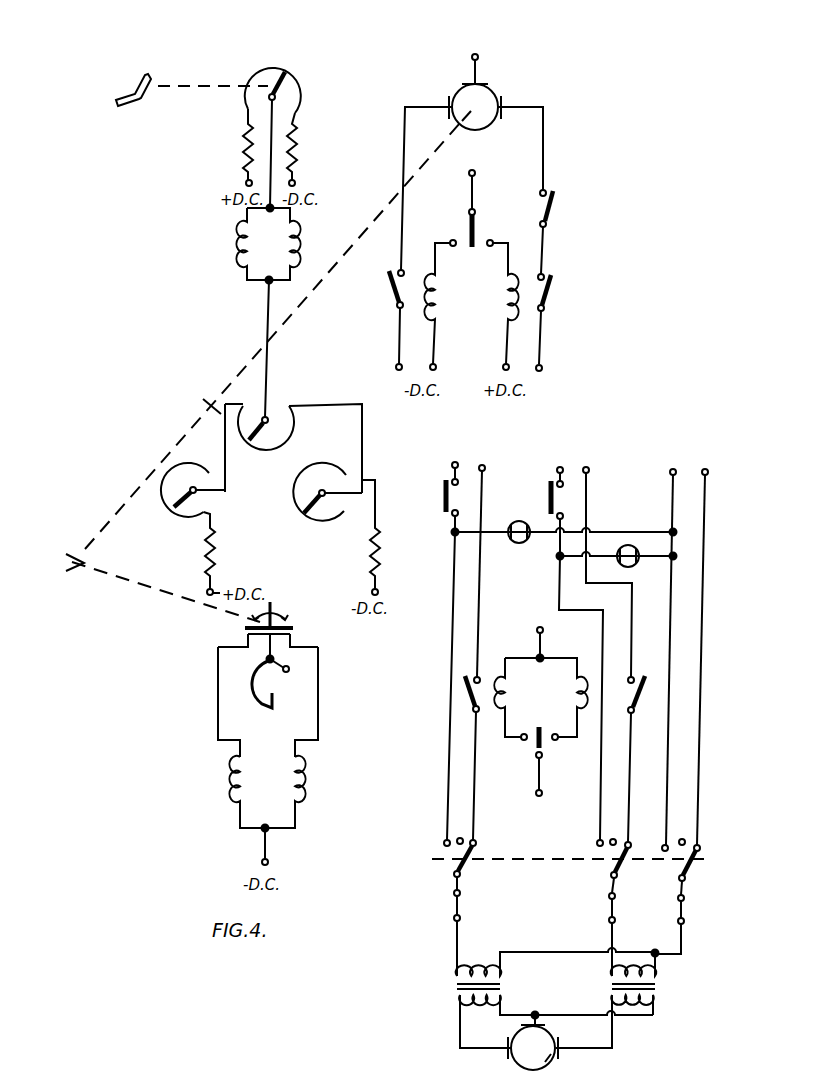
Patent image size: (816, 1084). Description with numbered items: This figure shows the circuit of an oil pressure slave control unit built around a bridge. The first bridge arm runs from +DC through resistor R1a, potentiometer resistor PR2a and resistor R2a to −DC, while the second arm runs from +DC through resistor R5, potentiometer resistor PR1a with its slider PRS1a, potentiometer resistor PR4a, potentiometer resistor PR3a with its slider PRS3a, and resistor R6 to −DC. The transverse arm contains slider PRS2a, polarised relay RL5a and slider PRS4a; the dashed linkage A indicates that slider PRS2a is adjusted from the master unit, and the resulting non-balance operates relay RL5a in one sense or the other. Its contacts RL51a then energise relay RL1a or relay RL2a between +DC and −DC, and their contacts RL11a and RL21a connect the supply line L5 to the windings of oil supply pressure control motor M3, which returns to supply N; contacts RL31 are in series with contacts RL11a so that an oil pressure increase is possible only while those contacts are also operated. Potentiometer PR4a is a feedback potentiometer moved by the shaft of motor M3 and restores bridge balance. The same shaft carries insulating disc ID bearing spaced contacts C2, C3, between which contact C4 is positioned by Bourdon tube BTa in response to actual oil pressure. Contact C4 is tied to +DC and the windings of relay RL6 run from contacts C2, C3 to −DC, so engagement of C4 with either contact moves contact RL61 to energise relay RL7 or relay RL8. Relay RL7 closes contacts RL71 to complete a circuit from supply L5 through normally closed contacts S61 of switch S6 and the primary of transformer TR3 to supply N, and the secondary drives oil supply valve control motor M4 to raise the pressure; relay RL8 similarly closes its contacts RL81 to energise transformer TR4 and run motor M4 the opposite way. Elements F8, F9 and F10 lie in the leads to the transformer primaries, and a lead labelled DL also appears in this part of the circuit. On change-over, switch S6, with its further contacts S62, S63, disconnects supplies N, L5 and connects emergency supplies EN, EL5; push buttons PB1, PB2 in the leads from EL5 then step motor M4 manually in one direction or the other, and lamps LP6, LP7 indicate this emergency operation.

The light beam source A is at (128, 94).
The slider PRS2a is at (281, 84).
The potentiometer resistor PR2a is at (298, 91).
The resistor R1a is at (244, 131).
The resistor R2a is at (294, 148).
The polarised relay RL5a is at (244, 239).
The supply N is at (479, 59).
The oil supply pressure control motor M3 is at (488, 101).
The contacts RL51a is at (470, 223).
The contacts RL31 is at (547, 207).
The contacts RL11a is at (547, 301).
The contacts RL21a is at (389, 286).
The relay RL1a is at (505, 292).
The relay RL2a is at (441, 316).
The supply line L5 is at (395, 368).
The slider PRS4a is at (258, 429).
The potentiometer resistor PR4a is at (292, 425).
The slider PRS1a is at (168, 500).
The potentiometer resistor PR1a is at (197, 516).
The slider PRS3a is at (306, 506).
The potentiometer resistor PR3a is at (331, 523).
The resistor R5 is at (216, 547).
The resistor R6 is at (380, 548).
The insulating disc ID is at (288, 626).
The contact C3 is at (246, 637).
The contact C2 is at (293, 638).
The contact C4 is at (267, 644).
The Bourdon tube BTa is at (262, 700).
The relay RL6 is at (268, 782).
The emergency supply EL5 is at (454, 463).
The emergency supply EN is at (672, 468).
The push button PB2 is at (445, 497).
The push button PB1 is at (550, 497).
The indicator lamp LP7 is at (521, 543).
The indicator lamp LP6 is at (629, 545).
The delay line DL is at (565, 608).
The relay RL7 is at (572, 693).
The relay RL8 is at (502, 682).
The contact RL61 is at (535, 746).
The relay contact RL81 is at (467, 692).
The contacts RL71 is at (616, 698).
The switch S6 is at (540, 863).
The switch contact S62 is at (468, 852).
The contacts S61 is at (600, 851).
The switch contact S63 is at (668, 857).
The fuse F9 is at (461, 905).
The fuse F8 is at (610, 907).
The fuse F10 is at (679, 907).
The transformer TR4 is at (456, 988).
The transformer TR3 is at (656, 988).
The oil supply valve control motor M4 is at (556, 1064).